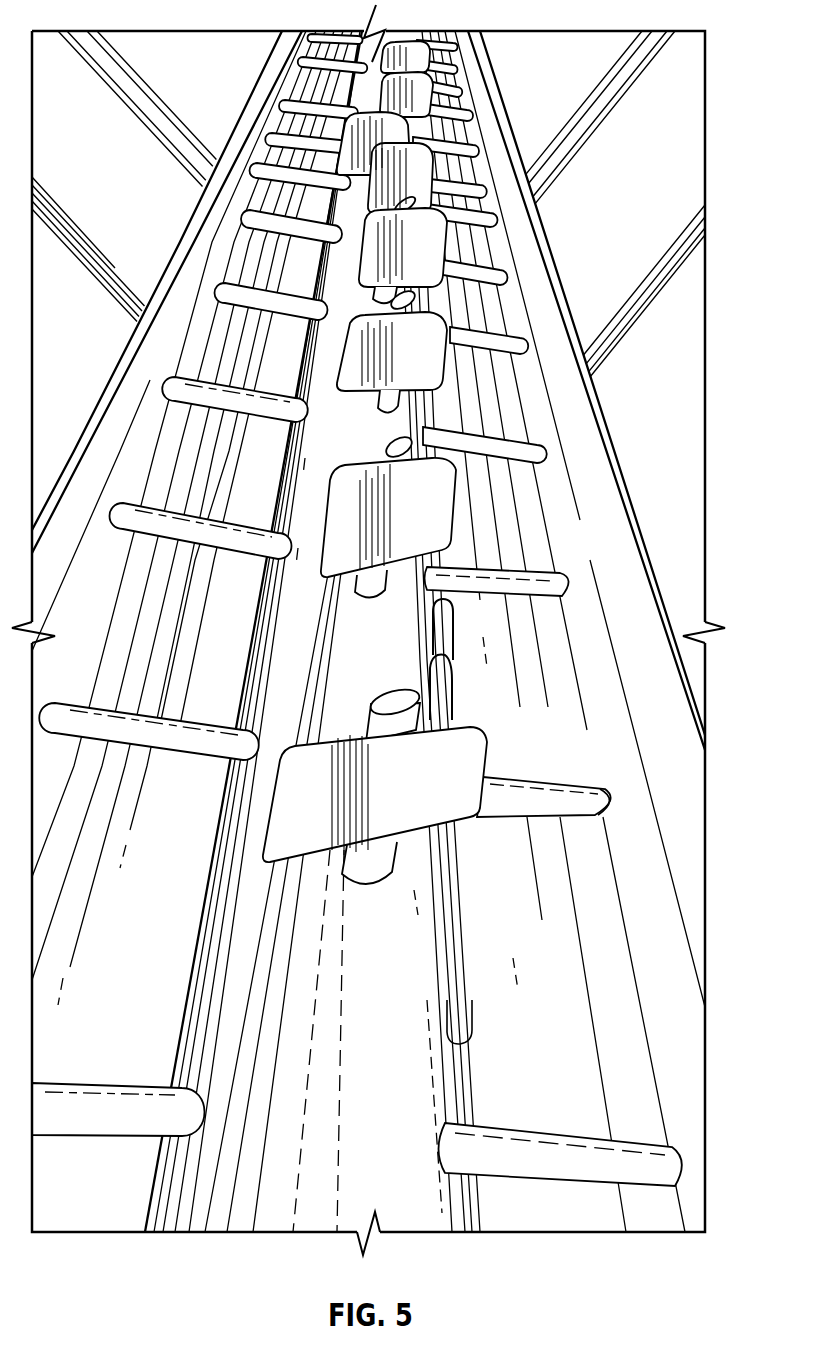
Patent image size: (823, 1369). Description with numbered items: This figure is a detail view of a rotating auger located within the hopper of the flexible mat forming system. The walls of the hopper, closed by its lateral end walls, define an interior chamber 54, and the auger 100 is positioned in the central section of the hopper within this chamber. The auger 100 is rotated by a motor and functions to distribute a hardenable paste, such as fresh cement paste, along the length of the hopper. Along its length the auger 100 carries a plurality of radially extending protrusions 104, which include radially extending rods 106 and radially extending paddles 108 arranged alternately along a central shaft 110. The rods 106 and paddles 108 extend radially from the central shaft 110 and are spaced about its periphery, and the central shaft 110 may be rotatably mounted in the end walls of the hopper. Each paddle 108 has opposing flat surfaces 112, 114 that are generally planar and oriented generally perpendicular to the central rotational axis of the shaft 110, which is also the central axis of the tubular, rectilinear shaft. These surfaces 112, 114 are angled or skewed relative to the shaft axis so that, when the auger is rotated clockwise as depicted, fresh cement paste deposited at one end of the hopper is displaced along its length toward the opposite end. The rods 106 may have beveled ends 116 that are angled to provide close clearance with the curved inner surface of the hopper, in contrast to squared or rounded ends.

The interior chamber 54 is at (661, 347).
The auger 100 is at (405, 644).
The radially extending protrusions 104 is at (512, 572).
The radially extending rods 106 is at (588, 803).
The radially extending paddles 108 is at (482, 745).
The central shaft 110 is at (443, 923).
The flat surface 112 is at (300, 760).
The flat surface 114 is at (318, 757).
The beveled ends 116 is at (605, 805).